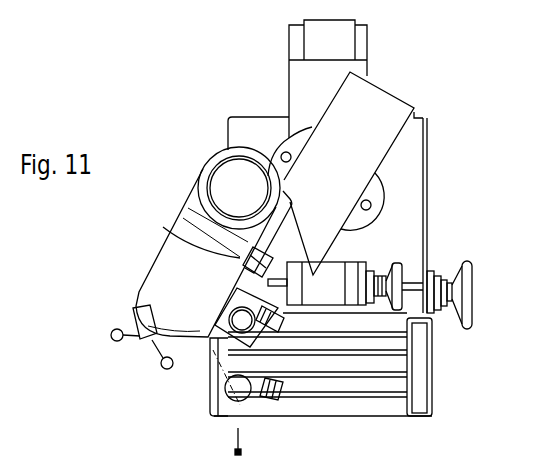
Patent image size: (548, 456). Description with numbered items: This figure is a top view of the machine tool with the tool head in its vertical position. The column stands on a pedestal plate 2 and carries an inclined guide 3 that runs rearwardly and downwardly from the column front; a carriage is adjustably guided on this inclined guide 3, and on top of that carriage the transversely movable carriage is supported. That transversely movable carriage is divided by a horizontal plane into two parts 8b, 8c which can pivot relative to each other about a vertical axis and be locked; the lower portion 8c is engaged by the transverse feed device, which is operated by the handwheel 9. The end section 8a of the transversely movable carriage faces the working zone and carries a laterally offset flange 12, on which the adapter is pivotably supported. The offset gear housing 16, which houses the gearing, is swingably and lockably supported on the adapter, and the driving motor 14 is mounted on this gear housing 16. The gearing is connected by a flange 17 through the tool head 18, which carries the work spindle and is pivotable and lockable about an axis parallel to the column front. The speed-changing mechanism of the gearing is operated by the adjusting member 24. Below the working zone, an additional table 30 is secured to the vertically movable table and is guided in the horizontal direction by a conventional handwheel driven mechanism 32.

The pedestal plate 2 is at (243, 123).
The inclined guide 3 is at (312, 43).
The section of the transversely movable carriage 8a is at (284, 208).
The part of the transversely movable carriage 8b is at (389, 103).
The lower portion of the transversely movable carriage 8c is at (298, 100).
The handwheel 9 is at (400, 262).
The flange 12 is at (163, 227).
The driving motor 14 is at (225, 180).
The gear housing 16 is at (168, 256).
The flange 17 is at (207, 334).
The tool head 18 is at (215, 345).
The adjusting member 24 is at (127, 341).
The additional table 30 is at (434, 403).
The handwheel driven mechanism 32 is at (468, 326).